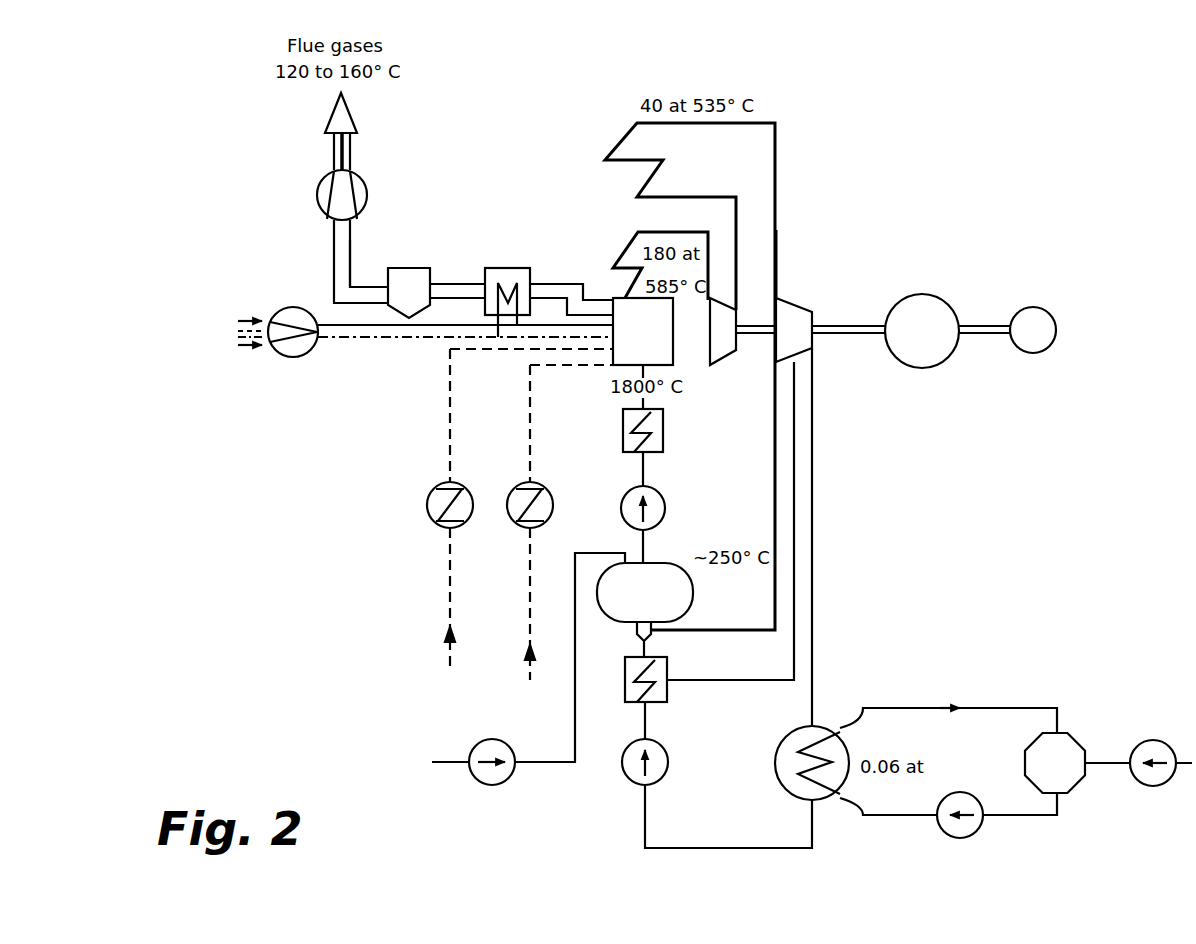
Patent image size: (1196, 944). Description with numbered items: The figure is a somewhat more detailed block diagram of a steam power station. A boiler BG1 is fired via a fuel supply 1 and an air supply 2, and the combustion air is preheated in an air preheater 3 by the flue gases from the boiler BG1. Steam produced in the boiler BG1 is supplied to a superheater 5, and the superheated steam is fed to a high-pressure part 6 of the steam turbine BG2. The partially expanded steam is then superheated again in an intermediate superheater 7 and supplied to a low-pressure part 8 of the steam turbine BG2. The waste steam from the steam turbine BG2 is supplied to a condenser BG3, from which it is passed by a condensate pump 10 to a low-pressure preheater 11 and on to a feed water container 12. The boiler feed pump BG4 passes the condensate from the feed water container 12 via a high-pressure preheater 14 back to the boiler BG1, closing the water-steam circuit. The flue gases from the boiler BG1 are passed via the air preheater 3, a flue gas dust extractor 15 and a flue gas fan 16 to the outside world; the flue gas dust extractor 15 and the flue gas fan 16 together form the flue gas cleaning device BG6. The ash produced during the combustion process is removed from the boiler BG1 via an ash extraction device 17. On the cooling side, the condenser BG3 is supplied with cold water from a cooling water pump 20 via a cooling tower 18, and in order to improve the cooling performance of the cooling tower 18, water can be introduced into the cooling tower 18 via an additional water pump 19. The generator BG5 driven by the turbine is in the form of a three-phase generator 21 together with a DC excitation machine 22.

The fuel supply 1 is at (447, 641).
The air supply 2 is at (248, 350).
The air preheater 3 is at (517, 268).
The superheater 5 is at (618, 262).
The high-pressure part 6 is at (745, 358).
The intermediate superheater 7 is at (628, 138).
The low-pressure part 8 is at (801, 345).
The condensate pump 10 is at (625, 766).
The low-pressure preheater 11 is at (667, 690).
The feed water container 12 is at (664, 612).
The high-pressure preheater 14 is at (623, 430).
The flue gas dust extractor 15 is at (425, 276).
The flue gas fan 16 is at (318, 197).
The ash extraction device 17 is at (528, 662).
The cooling tower 18 is at (1065, 748).
The additional water pump 19 is at (1158, 745).
The cooling water pump 20 is at (962, 838).
The 3-phase generator 21 is at (930, 292).
The DC excitation machine 22 is at (1036, 306).
The boiler BG1 is at (675, 347).
The steam turbine BG2 is at (794, 288).
The condenser BG3 is at (778, 762).
The boiler feed pump BG4 is at (665, 506).
The generator BG5 is at (968, 365).
The flue gas cleaning device BG6 is at (382, 246).